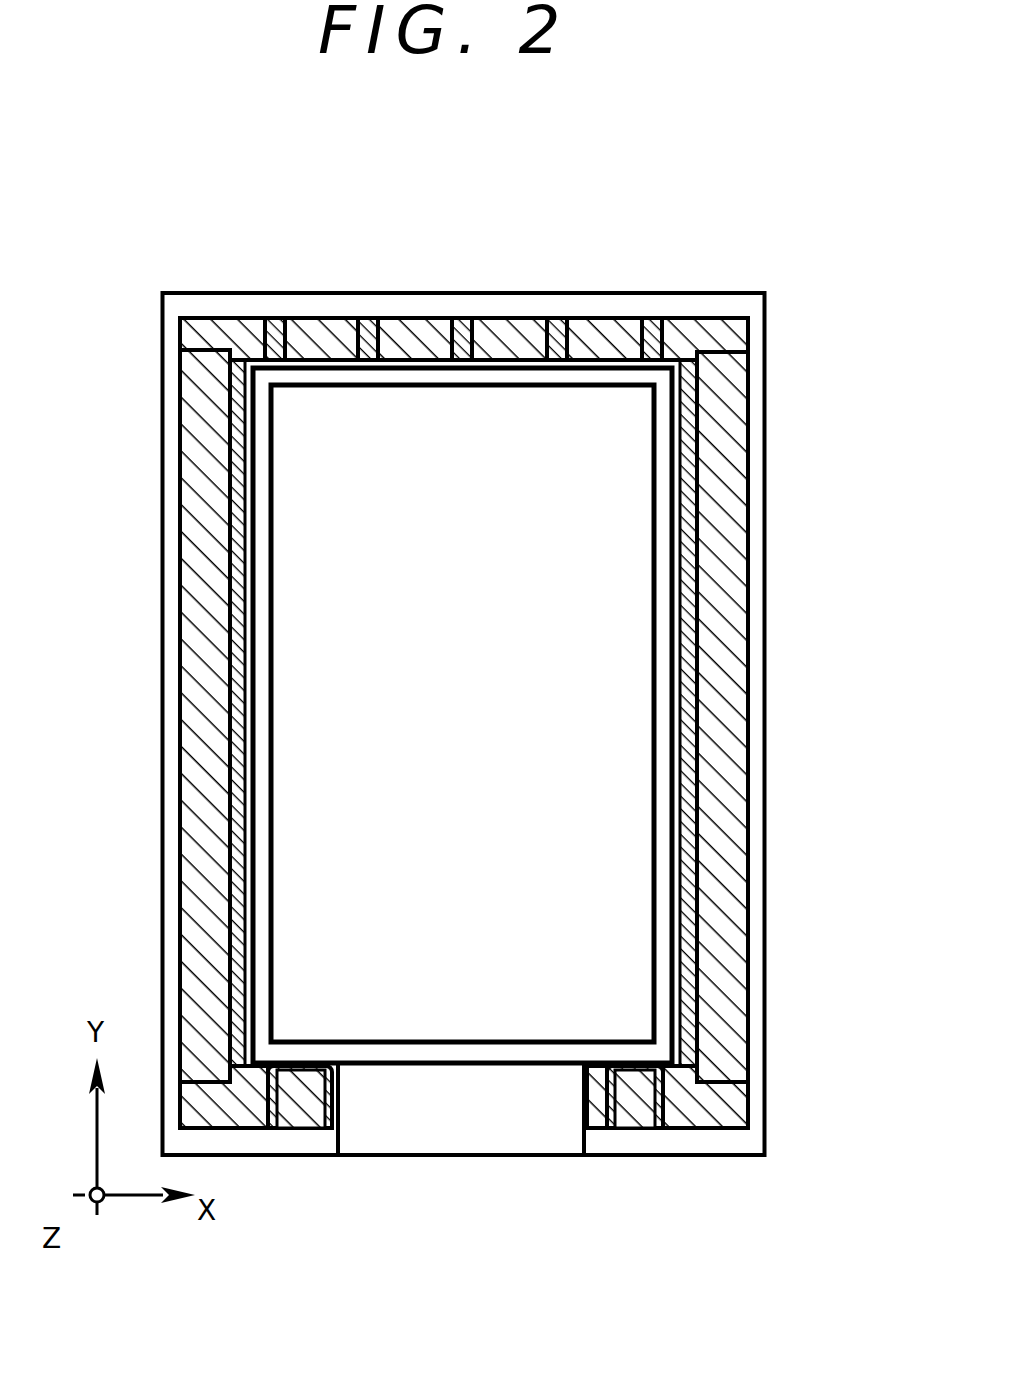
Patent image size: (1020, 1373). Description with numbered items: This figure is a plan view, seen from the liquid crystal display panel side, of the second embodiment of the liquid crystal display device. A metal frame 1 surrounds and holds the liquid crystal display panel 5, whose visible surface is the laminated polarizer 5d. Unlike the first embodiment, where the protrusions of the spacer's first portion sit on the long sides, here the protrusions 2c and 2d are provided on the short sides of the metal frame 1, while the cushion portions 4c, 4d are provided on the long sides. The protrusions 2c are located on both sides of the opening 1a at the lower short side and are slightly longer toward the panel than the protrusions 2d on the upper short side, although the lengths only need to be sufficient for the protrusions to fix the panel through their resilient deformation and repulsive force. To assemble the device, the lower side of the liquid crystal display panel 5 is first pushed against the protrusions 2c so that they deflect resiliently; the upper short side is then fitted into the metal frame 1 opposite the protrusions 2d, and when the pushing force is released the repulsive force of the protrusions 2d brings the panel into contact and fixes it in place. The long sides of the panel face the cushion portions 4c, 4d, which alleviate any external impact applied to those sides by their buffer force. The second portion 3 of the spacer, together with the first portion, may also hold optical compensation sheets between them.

The metal frame 1 is at (762, 557).
The opening 1a is at (467, 1141).
The protrusion 2c is at (622, 1095).
The protrusion 2d is at (590, 335).
The second portion of the spacer 3 is at (730, 332).
The cushion portion 4c is at (195, 412).
The cushion portion 4d is at (720, 362).
The liquid crystal display panel 5 is at (420, 368).
The polarizer 5d is at (483, 660).